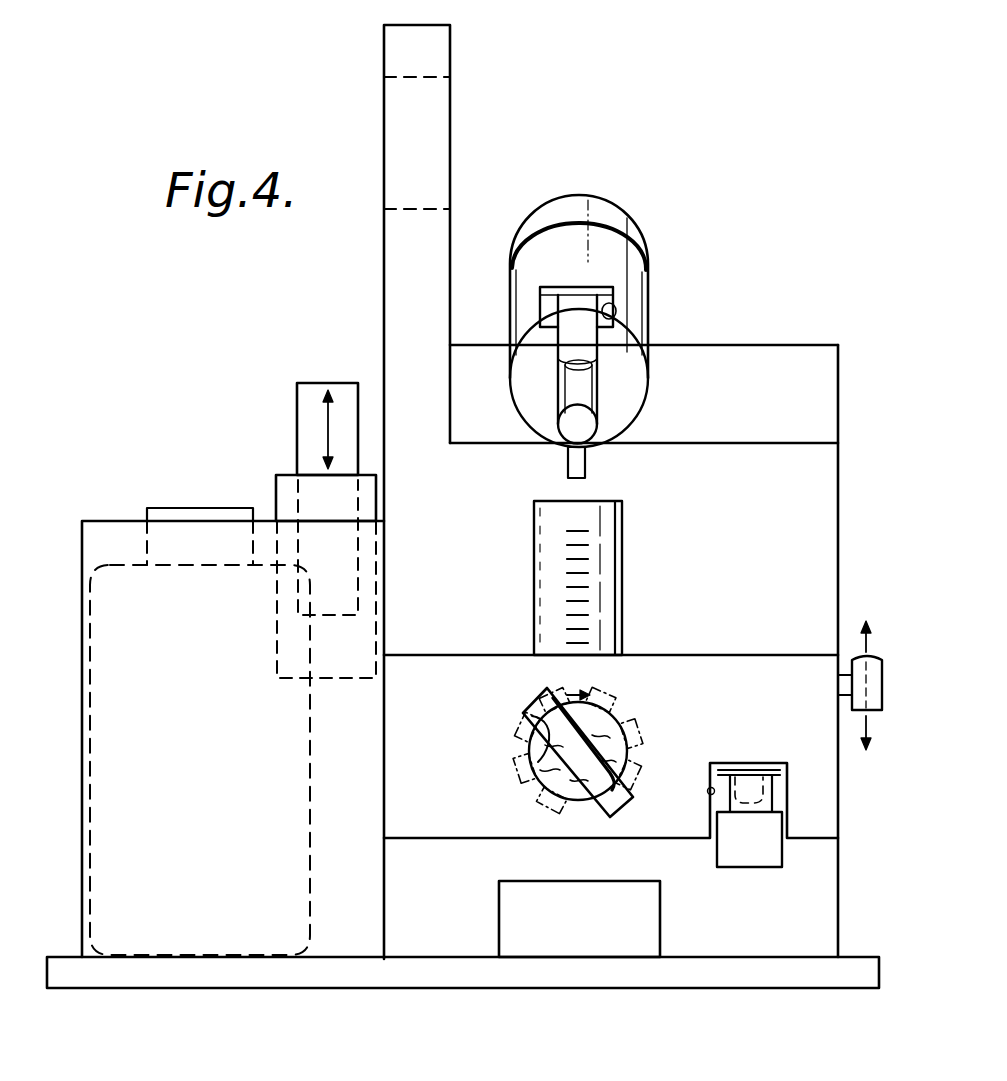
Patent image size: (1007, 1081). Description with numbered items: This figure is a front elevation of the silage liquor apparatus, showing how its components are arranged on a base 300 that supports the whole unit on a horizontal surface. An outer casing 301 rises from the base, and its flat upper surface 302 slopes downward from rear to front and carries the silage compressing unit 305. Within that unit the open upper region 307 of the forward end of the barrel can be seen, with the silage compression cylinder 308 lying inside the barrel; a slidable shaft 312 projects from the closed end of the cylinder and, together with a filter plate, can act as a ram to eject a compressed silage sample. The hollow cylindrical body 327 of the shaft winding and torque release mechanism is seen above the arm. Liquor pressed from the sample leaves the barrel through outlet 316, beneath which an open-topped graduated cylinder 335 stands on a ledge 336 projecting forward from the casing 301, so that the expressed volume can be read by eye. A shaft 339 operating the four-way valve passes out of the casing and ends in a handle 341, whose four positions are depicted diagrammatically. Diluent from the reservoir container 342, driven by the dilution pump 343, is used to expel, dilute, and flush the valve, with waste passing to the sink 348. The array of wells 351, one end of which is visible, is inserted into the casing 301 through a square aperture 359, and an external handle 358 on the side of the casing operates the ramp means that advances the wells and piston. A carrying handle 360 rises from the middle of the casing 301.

The base 300 is at (686, 975).
The outer casing 301 is at (838, 563).
The flat upper surface 302 is at (759, 357).
The silage compressing unit 305 is at (633, 293).
The forward portion of the barrel 307 is at (614, 314).
The silage compression cylinder 308 is at (565, 320).
The slidable shaft 312 is at (588, 393).
The outlet 316 is at (586, 468).
The hollow cylindrical body 327 is at (577, 203).
The graduated cylinder 335 is at (604, 577).
The ledge 336 is at (728, 655).
The shaft 339 is at (617, 713).
The handle 341 is at (537, 706).
The reservoir container 342 is at (133, 590).
The dilution pump 343 is at (312, 388).
The sink 348 is at (606, 935).
The array of wells 351 is at (747, 780).
The external handle 358 is at (851, 701).
The square aperture 359 is at (709, 789).
The carrying handle 360 is at (443, 97).